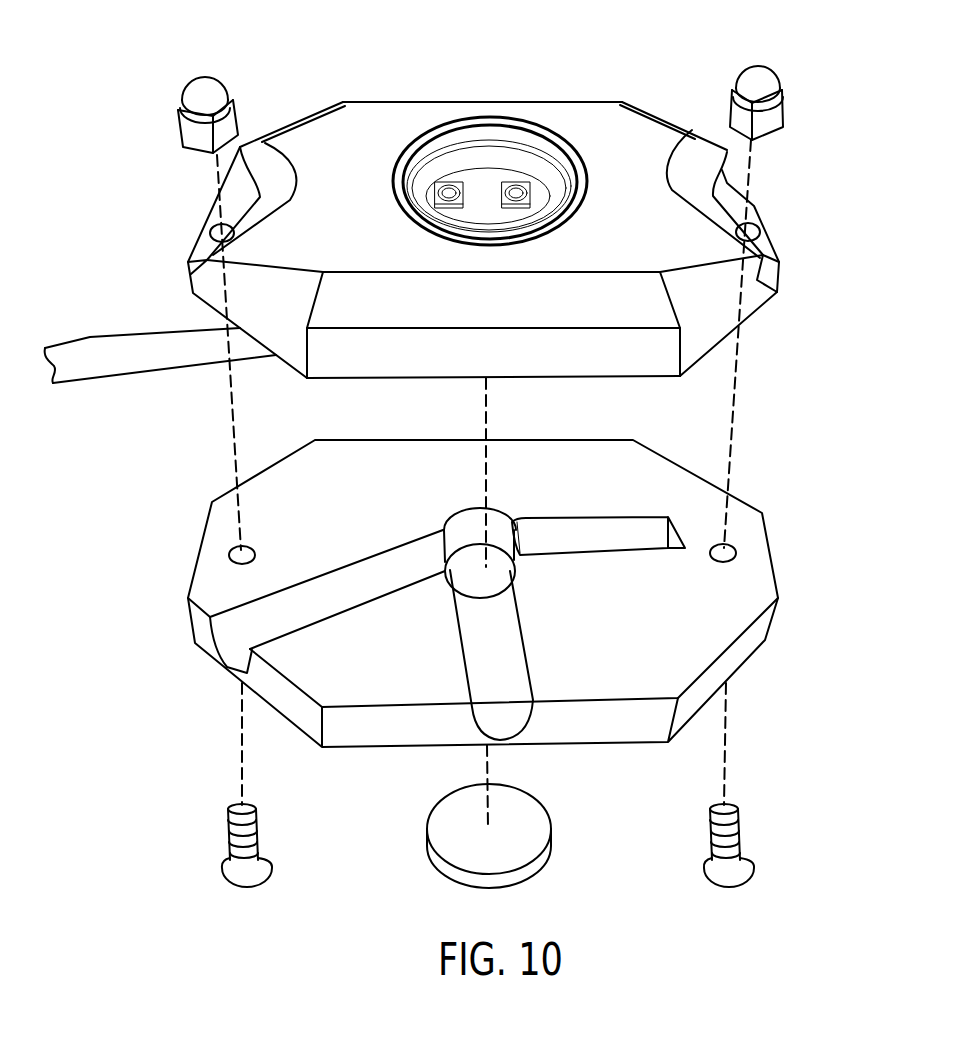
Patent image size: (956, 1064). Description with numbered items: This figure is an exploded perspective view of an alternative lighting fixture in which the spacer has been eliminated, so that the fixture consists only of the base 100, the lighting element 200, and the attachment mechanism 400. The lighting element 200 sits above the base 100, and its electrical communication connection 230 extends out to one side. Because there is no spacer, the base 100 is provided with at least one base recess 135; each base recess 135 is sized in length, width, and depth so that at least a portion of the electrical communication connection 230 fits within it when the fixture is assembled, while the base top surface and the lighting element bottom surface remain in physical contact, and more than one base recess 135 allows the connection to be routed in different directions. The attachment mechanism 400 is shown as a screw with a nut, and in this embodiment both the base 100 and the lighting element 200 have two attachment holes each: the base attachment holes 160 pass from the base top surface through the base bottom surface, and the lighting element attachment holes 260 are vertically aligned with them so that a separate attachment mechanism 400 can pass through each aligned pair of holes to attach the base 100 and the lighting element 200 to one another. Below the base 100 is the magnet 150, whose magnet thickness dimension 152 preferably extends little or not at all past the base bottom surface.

The base 100 is at (726, 663).
The base recess 135 is at (250, 650).
The magnet 150 is at (484, 834).
The magnet thickness dimension 152 is at (418, 819).
The base attachment hole 160 is at (228, 552).
The lighting element 200 is at (588, 118).
The electrical communication connection 230 is at (133, 355).
The lighting element attachment hole 260 is at (212, 236).
The attachment mechanism 400 is at (202, 95).